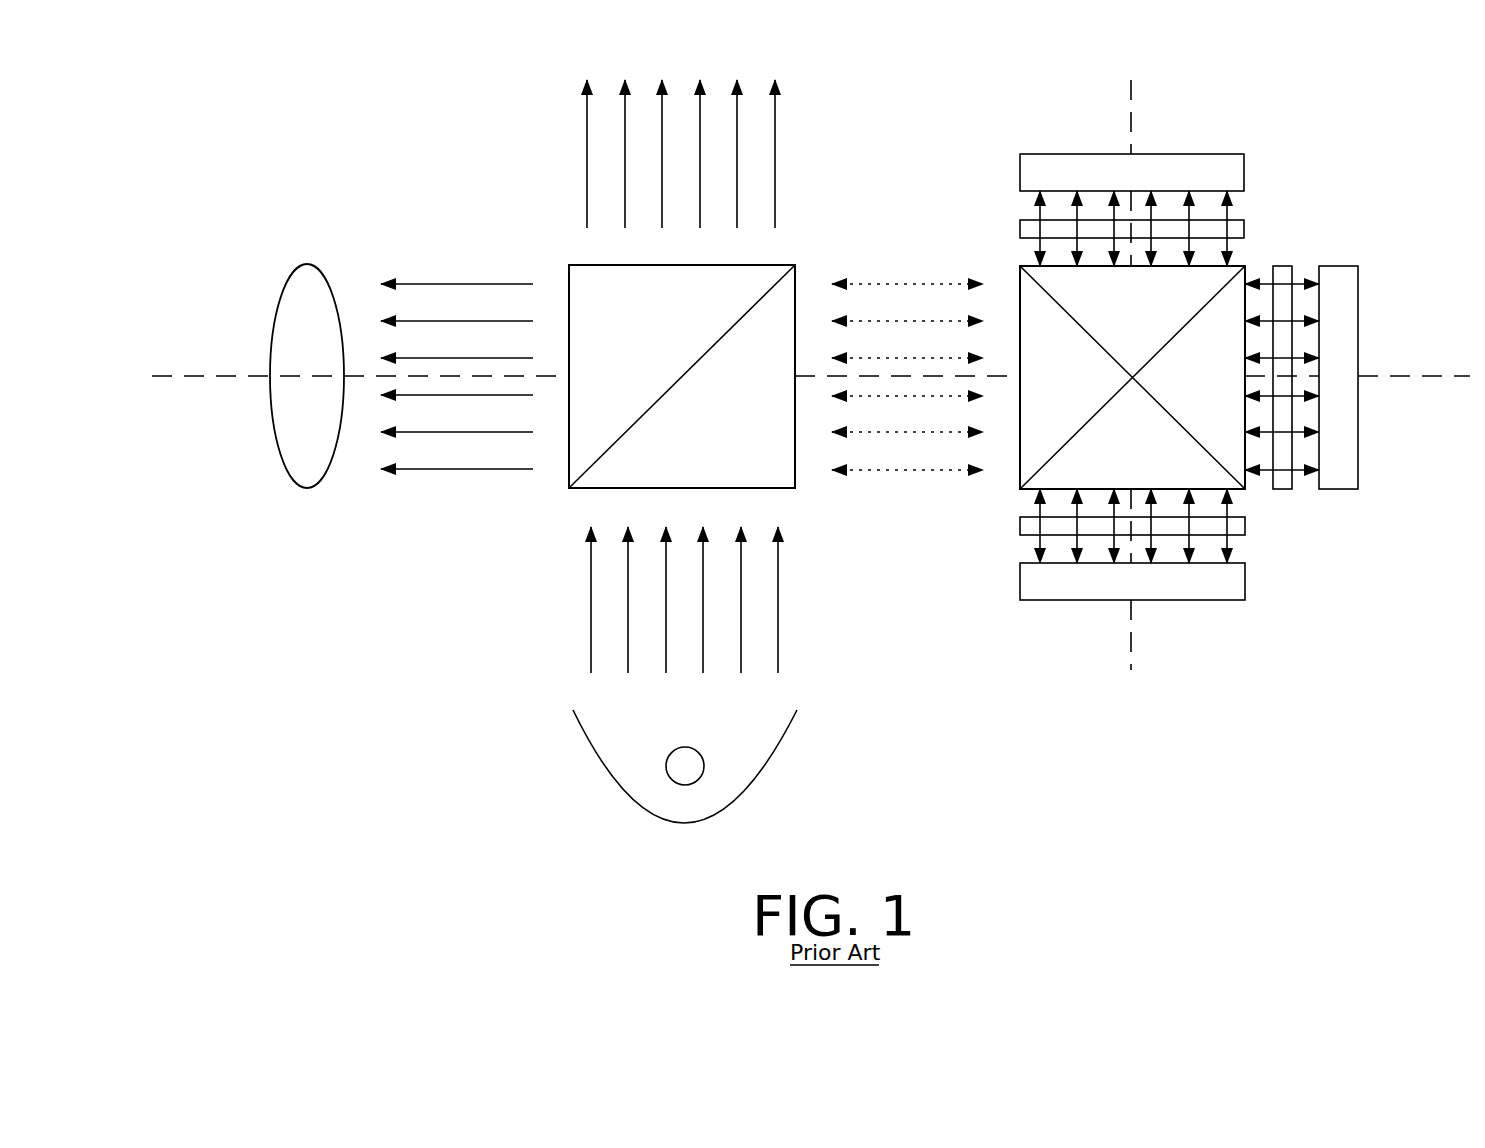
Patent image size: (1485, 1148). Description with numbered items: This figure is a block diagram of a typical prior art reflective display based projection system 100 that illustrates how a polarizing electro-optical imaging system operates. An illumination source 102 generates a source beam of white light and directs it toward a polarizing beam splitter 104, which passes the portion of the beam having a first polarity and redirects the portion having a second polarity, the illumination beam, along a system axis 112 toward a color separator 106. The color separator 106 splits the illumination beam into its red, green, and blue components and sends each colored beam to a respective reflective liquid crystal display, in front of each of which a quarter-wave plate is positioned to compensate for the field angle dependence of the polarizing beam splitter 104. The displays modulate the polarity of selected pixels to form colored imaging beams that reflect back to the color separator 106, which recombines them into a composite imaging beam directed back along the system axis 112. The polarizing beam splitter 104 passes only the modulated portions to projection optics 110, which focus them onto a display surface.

The projection system 100 is at (811, 455).
The illumination source 102 is at (793, 720).
The polarizing beam splitter 104 is at (795, 478).
The color separator 106 is at (1020, 270).
The projection optics 110 is at (311, 268).
The system axis 112 is at (170, 376).